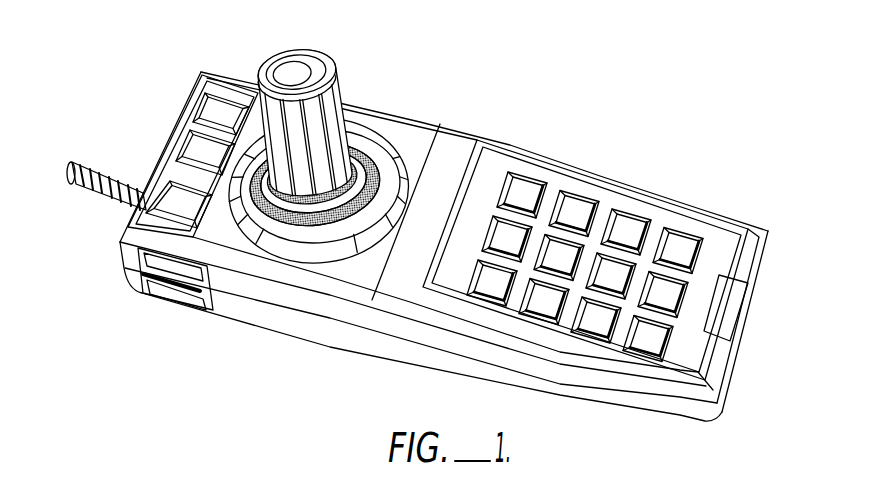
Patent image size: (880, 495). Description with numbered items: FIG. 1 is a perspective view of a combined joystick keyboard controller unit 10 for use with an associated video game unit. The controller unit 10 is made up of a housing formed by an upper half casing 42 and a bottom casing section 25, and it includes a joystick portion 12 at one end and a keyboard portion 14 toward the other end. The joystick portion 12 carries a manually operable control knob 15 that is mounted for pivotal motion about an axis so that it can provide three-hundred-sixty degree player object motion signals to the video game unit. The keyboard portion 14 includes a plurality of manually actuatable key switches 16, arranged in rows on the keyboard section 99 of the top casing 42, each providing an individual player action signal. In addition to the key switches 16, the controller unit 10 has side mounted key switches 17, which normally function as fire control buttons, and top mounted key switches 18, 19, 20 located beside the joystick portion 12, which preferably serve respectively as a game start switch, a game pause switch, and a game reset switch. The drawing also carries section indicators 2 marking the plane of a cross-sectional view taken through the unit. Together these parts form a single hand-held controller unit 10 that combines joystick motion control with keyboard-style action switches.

The combined joystick keyboard controller unit 10 is at (466, 118).
The joystick portion 12 is at (312, 41).
The keyboard portion 14 is at (664, 174).
The control knob 15 is at (326, 108).
The key switches 16 is at (672, 247).
The side mounted key switches 17 is at (172, 297).
The top mounted key switch 18 is at (172, 213).
The top mounted key switch 19 is at (197, 157).
The top mounted key switch 20 is at (218, 103).
The bottom casing section 25 is at (340, 345).
The upper half casing 42 is at (445, 333).
The keyboard section 99 is at (722, 243).
The section line 2- 2 is at (153, 157).